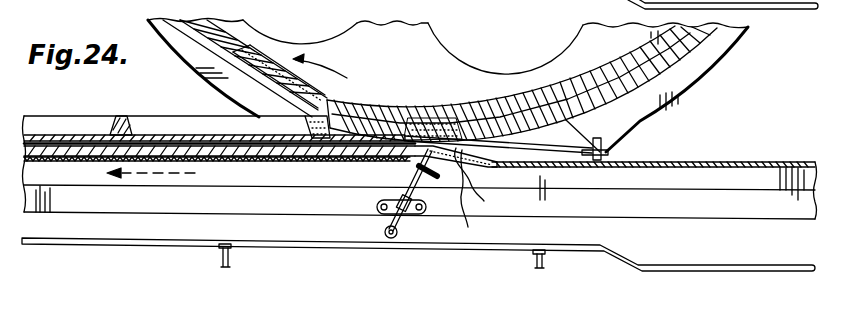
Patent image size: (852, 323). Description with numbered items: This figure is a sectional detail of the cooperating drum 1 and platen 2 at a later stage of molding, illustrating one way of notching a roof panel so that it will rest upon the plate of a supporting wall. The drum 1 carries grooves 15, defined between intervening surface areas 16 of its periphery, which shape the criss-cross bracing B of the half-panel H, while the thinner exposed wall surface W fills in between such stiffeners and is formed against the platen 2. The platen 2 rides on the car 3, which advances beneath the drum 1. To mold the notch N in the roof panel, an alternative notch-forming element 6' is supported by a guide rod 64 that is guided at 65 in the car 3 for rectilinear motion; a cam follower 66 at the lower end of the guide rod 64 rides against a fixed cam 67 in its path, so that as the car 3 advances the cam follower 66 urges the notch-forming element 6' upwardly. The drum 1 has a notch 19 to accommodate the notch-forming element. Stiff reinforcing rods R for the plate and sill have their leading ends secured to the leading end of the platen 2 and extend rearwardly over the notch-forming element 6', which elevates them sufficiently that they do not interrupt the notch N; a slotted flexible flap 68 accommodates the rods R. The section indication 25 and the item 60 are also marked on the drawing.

The drum 1 is at (426, 28).
The platen 2 is at (233, 162).
The car 3 is at (160, 203).
The grooves 15 is at (255, 68).
The intervening surface areas 16 is at (248, 53).
The notch 19 is at (427, 117).
The section line 25 is at (418, 73).
The rim band 60 is at (486, 142).
The guide rod 64 is at (402, 183).
The guide 65 is at (386, 193).
The cam follower 66 is at (398, 233).
The fixed cam 67 is at (623, 253).
The slotted flexible flap 68 is at (558, 135).
The half-panel H is at (54, 122).
The criss-cross bracing B is at (122, 117).
The reinforcing rods R is at (196, 142).
The exposed wall surface W is at (80, 152).
The notch N is at (476, 183).
The notch-forming element 6' is at (470, 197).